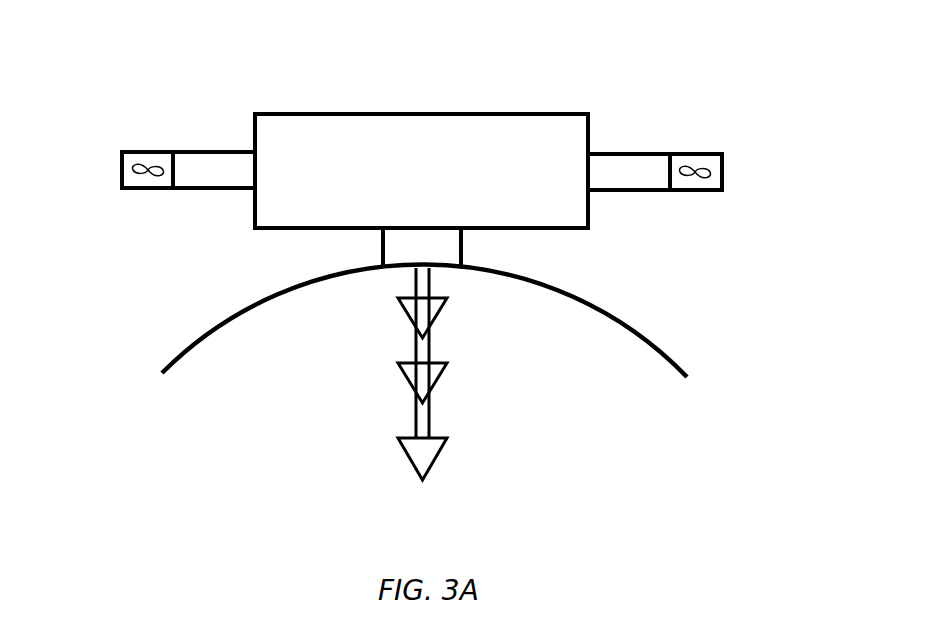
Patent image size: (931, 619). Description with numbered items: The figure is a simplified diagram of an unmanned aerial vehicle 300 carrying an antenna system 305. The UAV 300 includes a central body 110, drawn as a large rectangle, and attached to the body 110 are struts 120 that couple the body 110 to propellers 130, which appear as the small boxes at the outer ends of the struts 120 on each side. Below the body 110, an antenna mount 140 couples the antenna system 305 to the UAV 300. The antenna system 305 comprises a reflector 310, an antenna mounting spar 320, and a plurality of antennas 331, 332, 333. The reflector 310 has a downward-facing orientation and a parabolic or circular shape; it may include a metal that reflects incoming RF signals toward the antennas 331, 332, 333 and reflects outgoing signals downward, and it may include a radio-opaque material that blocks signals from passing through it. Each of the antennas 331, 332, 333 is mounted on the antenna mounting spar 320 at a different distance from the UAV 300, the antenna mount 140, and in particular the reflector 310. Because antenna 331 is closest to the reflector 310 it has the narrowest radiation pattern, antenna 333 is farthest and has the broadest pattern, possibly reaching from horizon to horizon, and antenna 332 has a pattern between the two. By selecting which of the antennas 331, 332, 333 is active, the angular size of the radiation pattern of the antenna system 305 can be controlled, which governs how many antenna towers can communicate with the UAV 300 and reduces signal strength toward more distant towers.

The unmanned aerial vehicle 300 is at (664, 61).
The central body 110 is at (398, 114).
The strut 120 is at (213, 152).
The propeller 130 is at (700, 154).
The antenna mount 140 is at (461, 253).
The reflector 310 is at (652, 340).
The antenna system 305 is at (152, 280).
The antenna mounting spar 320 is at (415, 379).
The antenna 331 is at (408, 317).
The antenna 332 is at (408, 382).
The antenna 333 is at (408, 453).